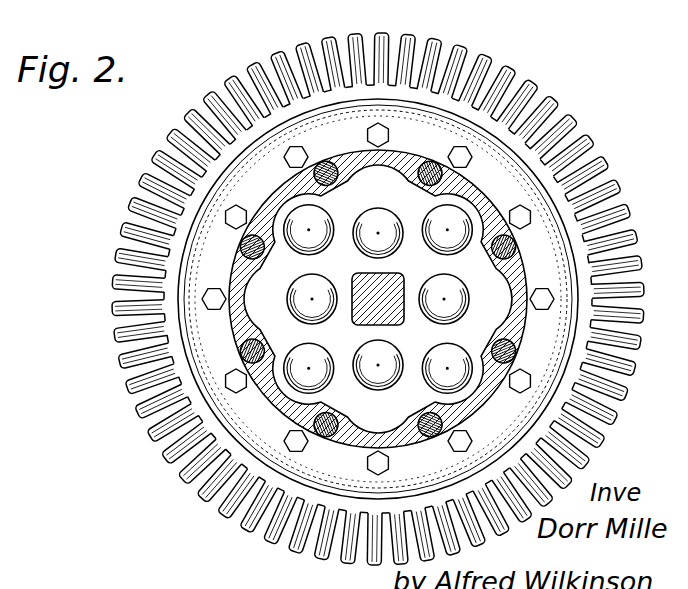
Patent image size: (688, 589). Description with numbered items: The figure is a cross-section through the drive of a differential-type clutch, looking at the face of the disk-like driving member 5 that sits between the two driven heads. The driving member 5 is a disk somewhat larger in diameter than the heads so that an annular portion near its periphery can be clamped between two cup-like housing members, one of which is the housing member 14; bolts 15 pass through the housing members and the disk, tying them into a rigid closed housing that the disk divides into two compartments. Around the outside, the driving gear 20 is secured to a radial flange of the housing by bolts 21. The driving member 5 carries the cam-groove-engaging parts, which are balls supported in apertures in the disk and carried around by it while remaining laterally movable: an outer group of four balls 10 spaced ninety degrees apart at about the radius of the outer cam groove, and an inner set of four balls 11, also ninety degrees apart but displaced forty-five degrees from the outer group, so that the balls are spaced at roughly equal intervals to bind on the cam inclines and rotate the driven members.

The driving member 5 is at (475, 268).
The balls 10 is at (433, 212).
The balls 11 is at (372, 242).
The housing member 14 is at (406, 157).
The bolts 15 is at (443, 175).
The driving gear 20 is at (217, 90).
The bolts 21 is at (549, 297).